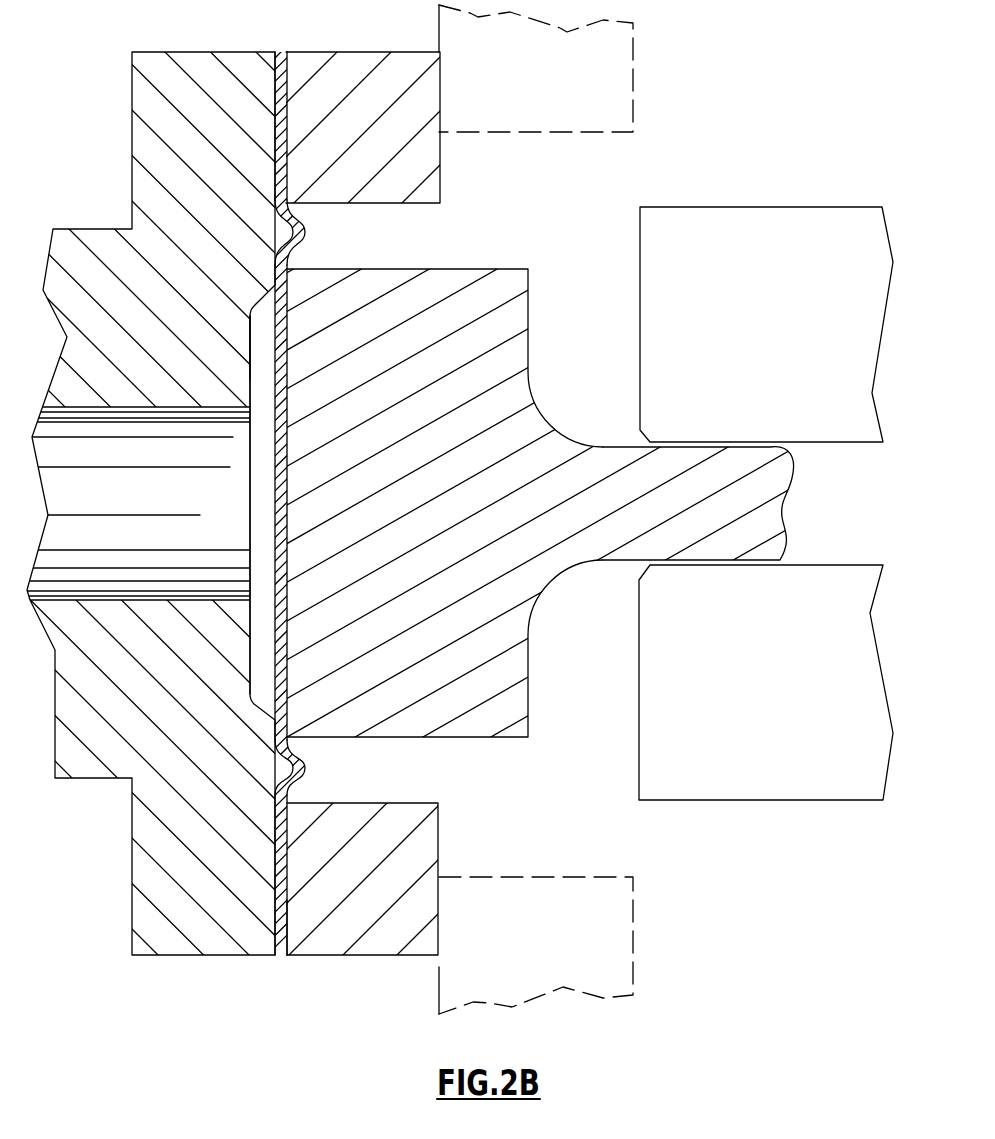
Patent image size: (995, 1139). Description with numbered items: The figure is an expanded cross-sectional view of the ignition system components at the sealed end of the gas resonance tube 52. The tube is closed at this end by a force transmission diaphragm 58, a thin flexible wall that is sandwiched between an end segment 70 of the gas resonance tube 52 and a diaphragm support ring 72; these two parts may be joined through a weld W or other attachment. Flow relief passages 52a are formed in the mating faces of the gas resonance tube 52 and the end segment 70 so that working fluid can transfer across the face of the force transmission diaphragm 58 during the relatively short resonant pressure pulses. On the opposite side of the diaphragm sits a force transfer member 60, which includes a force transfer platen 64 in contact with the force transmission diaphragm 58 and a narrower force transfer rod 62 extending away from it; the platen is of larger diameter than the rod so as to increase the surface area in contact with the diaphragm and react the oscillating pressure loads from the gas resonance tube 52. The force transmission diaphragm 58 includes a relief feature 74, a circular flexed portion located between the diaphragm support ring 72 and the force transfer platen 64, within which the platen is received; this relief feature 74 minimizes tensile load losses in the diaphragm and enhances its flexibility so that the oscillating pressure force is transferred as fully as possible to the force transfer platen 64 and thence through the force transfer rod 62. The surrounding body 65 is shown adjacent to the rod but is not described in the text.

The gas resonance tube 52 is at (128, 503).
The flow relief passages 52a is at (263, 370).
The force transmission diaphragm 58 is at (275, 497).
The force transfer member 60 is at (543, 426).
The force transfer rod 62 is at (690, 467).
The force transfer platen 64 is at (428, 415).
The nut / retaining member 65 is at (750, 290).
The end segment 70 is at (245, 400).
The diaphragm support ring 72 is at (388, 890).
The relief feature 74 is at (300, 219).
The weld W is at (287, 924).